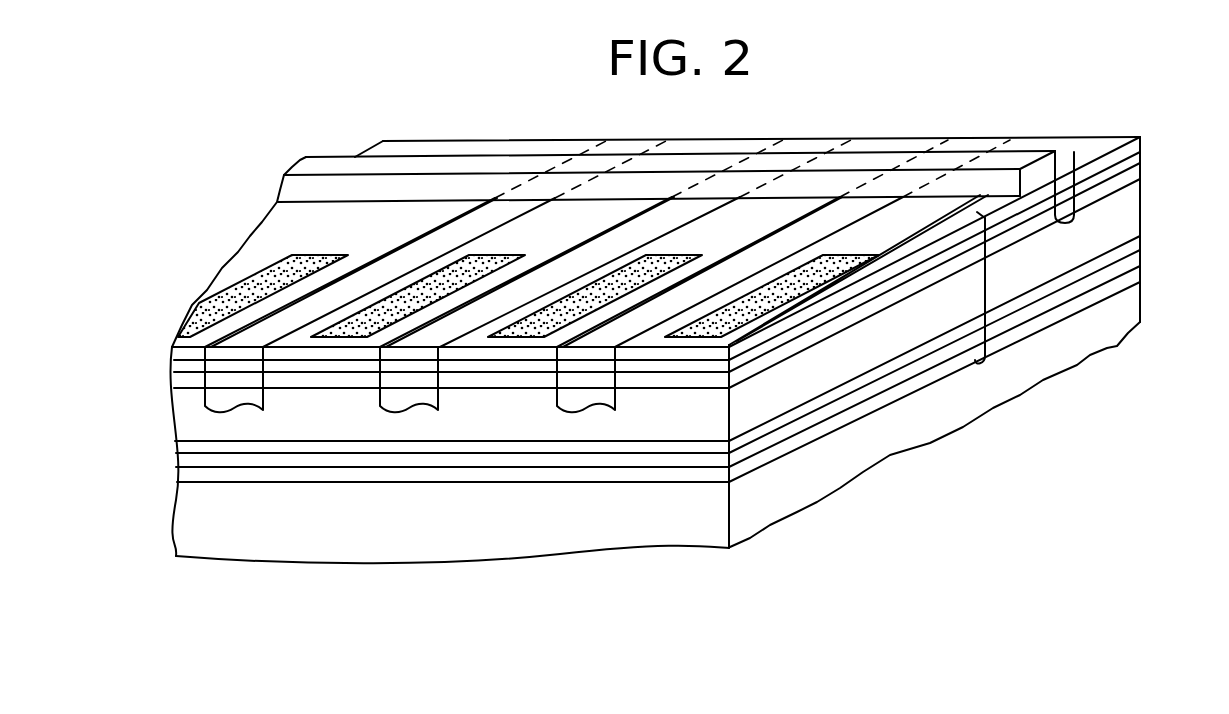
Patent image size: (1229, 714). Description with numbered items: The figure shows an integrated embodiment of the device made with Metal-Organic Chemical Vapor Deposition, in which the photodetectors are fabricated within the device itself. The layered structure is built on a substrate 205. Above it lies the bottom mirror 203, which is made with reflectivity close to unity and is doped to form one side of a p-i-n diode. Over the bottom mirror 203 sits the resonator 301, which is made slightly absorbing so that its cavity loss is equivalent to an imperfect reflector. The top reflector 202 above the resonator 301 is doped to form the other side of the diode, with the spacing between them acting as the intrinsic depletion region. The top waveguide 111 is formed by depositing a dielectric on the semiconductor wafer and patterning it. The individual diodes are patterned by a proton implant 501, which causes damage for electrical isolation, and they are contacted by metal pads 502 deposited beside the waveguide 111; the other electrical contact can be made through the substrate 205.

The waveguide 111 is at (1077, 178).
The top reflector 202 is at (1146, 136).
The bottom mirror 203 is at (1146, 231).
The substrate 205 is at (341, 545).
The resonator 301 is at (988, 287).
The proton implant 501 is at (220, 368).
The metal pads 502 is at (244, 302).